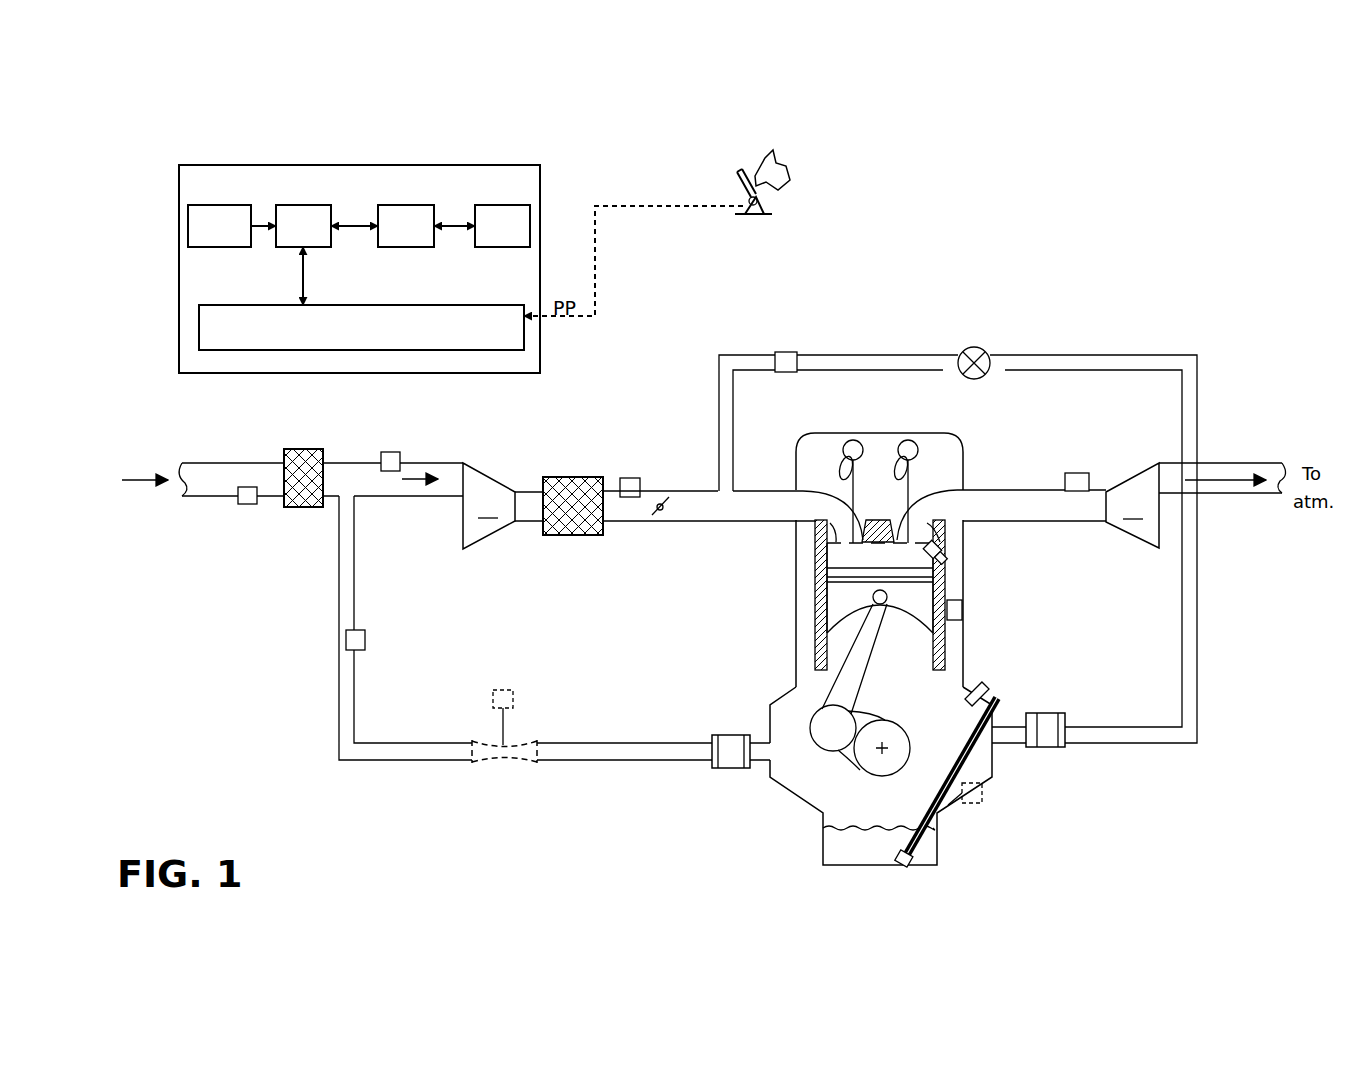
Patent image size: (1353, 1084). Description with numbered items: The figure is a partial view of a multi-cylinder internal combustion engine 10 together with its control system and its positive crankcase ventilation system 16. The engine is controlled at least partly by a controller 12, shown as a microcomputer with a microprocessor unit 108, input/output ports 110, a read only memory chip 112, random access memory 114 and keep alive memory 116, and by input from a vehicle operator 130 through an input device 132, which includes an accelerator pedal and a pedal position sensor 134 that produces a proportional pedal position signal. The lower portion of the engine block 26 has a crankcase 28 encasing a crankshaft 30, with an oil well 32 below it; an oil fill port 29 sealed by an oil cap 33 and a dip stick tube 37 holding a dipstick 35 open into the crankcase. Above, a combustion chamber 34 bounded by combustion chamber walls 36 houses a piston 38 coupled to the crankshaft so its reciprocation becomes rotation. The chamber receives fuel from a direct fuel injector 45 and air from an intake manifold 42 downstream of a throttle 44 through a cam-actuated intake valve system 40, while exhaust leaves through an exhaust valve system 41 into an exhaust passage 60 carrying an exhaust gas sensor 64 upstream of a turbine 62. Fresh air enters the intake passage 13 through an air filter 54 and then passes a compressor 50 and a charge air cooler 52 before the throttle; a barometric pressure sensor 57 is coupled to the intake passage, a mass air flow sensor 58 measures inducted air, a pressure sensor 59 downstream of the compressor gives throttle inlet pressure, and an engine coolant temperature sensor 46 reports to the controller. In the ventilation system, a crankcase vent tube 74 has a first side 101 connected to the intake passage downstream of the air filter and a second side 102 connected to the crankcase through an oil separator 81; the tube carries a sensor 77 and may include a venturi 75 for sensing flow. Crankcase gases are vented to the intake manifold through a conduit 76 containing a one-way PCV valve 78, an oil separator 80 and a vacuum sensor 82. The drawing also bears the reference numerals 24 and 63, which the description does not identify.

The internal combustion engine 10 is at (1205, 182).
The controller 12 is at (513, 165).
The intake passage 13 is at (198, 462).
The positive crankcase ventilation system 16 is at (1145, 300).
The crankcase ventilation passage 24 is at (1062, 372).
The engine block 26 is at (998, 846).
The crankcase 28 is at (990, 778).
The oil fill port 29 is at (972, 692).
The crankshaft 30 is at (833, 728).
The oil well 32 is at (878, 847).
The oil cap 33 is at (981, 684).
The combustion chamber 34 is at (830, 552).
The dipstick 35 is at (990, 698).
The combustion chamber walls 36 is at (945, 580).
The dip stick tube 37 is at (963, 742).
The piston 38 is at (837, 597).
The intake valve system 40 is at (855, 492).
The exhaust valve system 41 is at (910, 492).
The intake manifold 42 is at (747, 523).
The throttle 44 is at (661, 512).
The fuel injector 45 is at (948, 542).
The engine coolant temperature sensor 46 is at (962, 612).
The compressor 50 is at (489, 506).
The charge air cooler 52 is at (570, 477).
The air filter 54 is at (296, 449).
The barometric pressure sensor 57 is at (248, 504).
The mass air flow sensor 58 is at (381, 456).
The pressure sensor 59 is at (630, 478).
The exhaust passage 60 is at (995, 490).
The turbine 62 is at (1132, 505).
The fuel tank pressure sensor 63 is at (972, 803).
The exhaust gas sensor 64 is at (1089, 473).
The crankcase vent tube 74 is at (595, 760).
The venturi 75 is at (500, 762).
The PCV line 76 is at (890, 372).
The crankcase vent tube sensor 77 is at (365, 640).
The PCV valve 78 is at (972, 347).
The oil separator 80 is at (1042, 713).
The oil separator 81 is at (722, 735).
The vacuum sensor 82 is at (783, 372).
The first side of crankcase vent tube 101 is at (332, 505).
The second side of crankcase vent tube 102 is at (762, 770).
The microprocessor unit 108 is at (308, 205).
The input/output ports 110 is at (365, 305).
The read only memory chip 112 is at (220, 205).
The random access memory 114 is at (403, 205).
The keep alive memory 116 is at (503, 205).
The vehicle operator 130 is at (785, 172).
The input device 132 is at (737, 180).
The pedal position sensor 134 is at (768, 207).